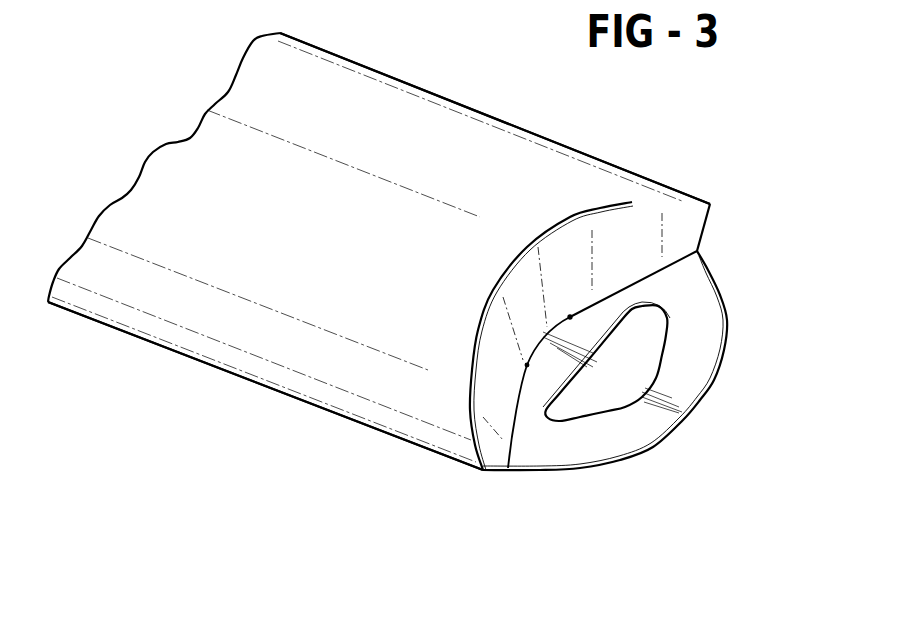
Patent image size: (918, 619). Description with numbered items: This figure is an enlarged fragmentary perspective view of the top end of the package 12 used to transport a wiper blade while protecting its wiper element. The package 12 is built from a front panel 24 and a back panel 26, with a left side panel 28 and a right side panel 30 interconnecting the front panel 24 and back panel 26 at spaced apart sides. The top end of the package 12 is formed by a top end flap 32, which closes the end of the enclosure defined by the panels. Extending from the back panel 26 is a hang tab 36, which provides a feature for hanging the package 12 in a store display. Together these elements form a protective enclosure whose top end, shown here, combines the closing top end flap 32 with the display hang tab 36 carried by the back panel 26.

The package 12 is at (597, 127).
The front panel 24 is at (475, 107).
The back panel 26 is at (582, 337).
The left side panel 28 is at (690, 223).
The right side panel 30 is at (490, 472).
The top end flap 32 is at (552, 280).
The hang tab 36 is at (709, 383).